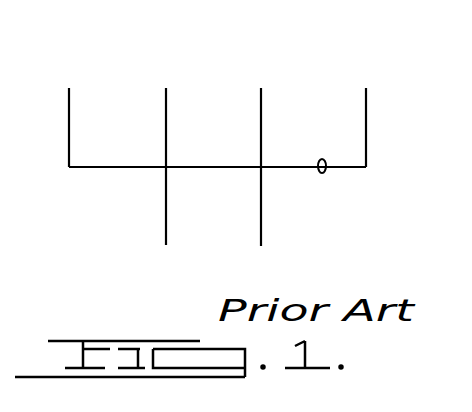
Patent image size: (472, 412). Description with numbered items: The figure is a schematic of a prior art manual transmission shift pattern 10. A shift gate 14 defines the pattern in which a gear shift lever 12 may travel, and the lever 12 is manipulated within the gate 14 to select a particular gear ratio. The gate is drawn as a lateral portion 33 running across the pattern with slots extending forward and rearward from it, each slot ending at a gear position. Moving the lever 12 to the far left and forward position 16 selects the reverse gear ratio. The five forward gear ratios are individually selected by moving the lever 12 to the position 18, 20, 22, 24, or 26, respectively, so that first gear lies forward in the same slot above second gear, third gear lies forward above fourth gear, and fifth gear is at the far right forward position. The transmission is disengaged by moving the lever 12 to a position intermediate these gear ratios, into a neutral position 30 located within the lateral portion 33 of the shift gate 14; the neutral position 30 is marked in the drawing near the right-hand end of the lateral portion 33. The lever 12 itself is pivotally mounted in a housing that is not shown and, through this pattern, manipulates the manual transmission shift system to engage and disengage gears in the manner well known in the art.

The manual transmission shift pattern 10 is at (213, 70).
The gear shift lever 12 is at (321, 158).
The shift gate 14 is at (98, 168).
The far left and forward position 16 is at (70, 90).
The first gear position 18 is at (167, 90).
The second gear position 20 is at (166, 243).
The third gear position 22 is at (262, 87).
The fourth gear position 24 is at (262, 246).
The fifth gear position 26 is at (366, 91).
The neutral position 30 is at (352, 183).
The lateral portion 33 is at (207, 168).